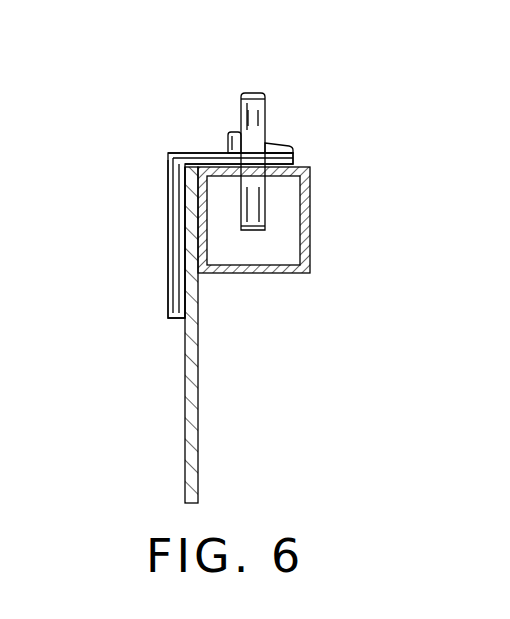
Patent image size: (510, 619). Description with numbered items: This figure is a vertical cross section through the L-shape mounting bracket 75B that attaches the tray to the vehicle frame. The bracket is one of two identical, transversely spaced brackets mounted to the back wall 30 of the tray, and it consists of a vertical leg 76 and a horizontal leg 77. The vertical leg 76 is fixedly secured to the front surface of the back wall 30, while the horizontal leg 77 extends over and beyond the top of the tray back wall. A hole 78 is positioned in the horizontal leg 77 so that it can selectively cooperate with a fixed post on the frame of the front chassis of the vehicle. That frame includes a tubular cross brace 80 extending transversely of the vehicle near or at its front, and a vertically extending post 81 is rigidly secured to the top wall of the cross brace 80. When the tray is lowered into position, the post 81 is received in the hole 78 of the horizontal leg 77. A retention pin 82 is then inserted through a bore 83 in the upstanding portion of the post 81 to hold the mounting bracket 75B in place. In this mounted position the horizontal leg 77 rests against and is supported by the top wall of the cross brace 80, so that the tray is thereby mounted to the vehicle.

The back wall 30 is at (185, 375).
The L-shape mounting bracket 75B is at (176, 200).
The vertical leg 76 is at (170, 260).
The horizontal leg 77 is at (190, 153).
The hole 78 is at (293, 162).
The tubular cross brace 80 is at (267, 273).
The post 81 is at (266, 108).
The retention pin 82 is at (227, 137).
The bore 83 is at (258, 127).